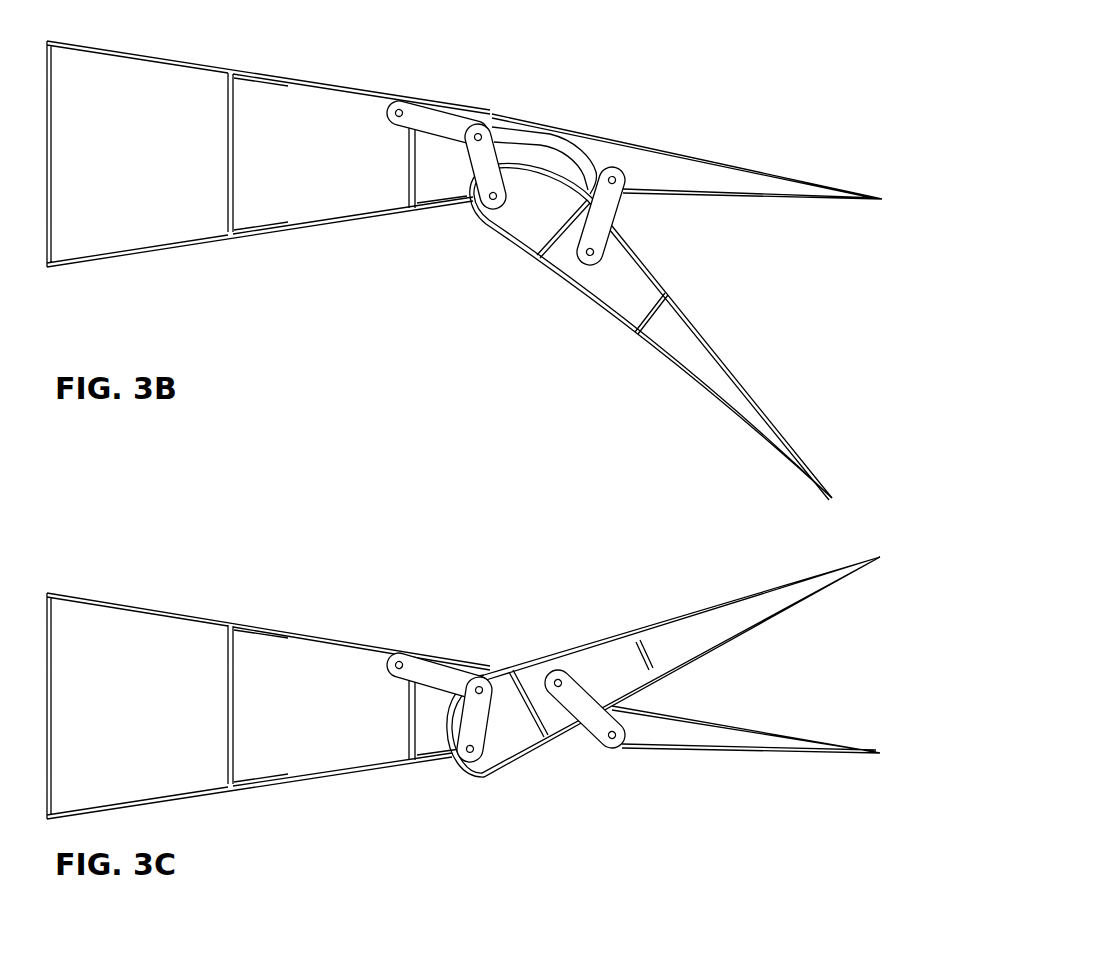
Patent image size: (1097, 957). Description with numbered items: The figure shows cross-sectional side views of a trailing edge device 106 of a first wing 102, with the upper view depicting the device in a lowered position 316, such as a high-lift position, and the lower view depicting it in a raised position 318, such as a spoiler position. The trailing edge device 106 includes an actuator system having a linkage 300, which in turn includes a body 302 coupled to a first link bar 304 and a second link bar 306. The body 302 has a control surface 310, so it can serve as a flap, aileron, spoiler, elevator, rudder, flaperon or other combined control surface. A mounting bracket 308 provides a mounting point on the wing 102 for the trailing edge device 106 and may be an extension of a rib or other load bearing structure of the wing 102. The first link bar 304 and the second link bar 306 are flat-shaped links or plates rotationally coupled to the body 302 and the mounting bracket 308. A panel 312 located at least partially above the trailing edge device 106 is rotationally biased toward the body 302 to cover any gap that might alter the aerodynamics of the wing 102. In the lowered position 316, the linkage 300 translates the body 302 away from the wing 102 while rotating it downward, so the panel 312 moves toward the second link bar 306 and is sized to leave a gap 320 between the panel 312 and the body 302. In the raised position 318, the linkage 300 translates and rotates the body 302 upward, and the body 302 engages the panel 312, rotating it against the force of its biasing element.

In FIG. 3B, the first wing 102 is at (311, 80).
In FIG. 3C, the first wing 102 is at (311, 632).
In FIG. 3B, the trailing edge device 106 is at (682, 307).
In FIG. 3C, the trailing edge device 106 is at (663, 635).
In FIG. 3B, the linkage 300 is at (498, 155).
In FIG. 3C, the linkage 300 is at (507, 747).
In FIG. 3B, the body 302 is at (730, 385).
In FIG. 3C, the body 302 is at (733, 618).
In FIG. 3B, the first link bar 304 is at (614, 172).
In FIG. 3C, the first link bar 304 is at (596, 745).
In FIG. 3B, the second link bar 306 is at (488, 124).
In FIG. 3C, the second link bar 306 is at (488, 677).
In FIG. 3B, the mounting bracket 308 is at (402, 133).
In FIG. 3C, the mounting bracket 308 is at (408, 707).
In FIG. 3B, the control surface 310 is at (655, 283).
In FIG. 3C, the control surface 310 is at (652, 618).
In FIG. 3B, the panel 312 is at (428, 102).
In FIG. 3C, the panel 312 is at (428, 654).
In FIG. 3B, the lowered position 316 is at (852, 466).
In FIG. 3C, the raised position 318 is at (880, 603).
In FIG. 3B, the gap 320 is at (525, 126).